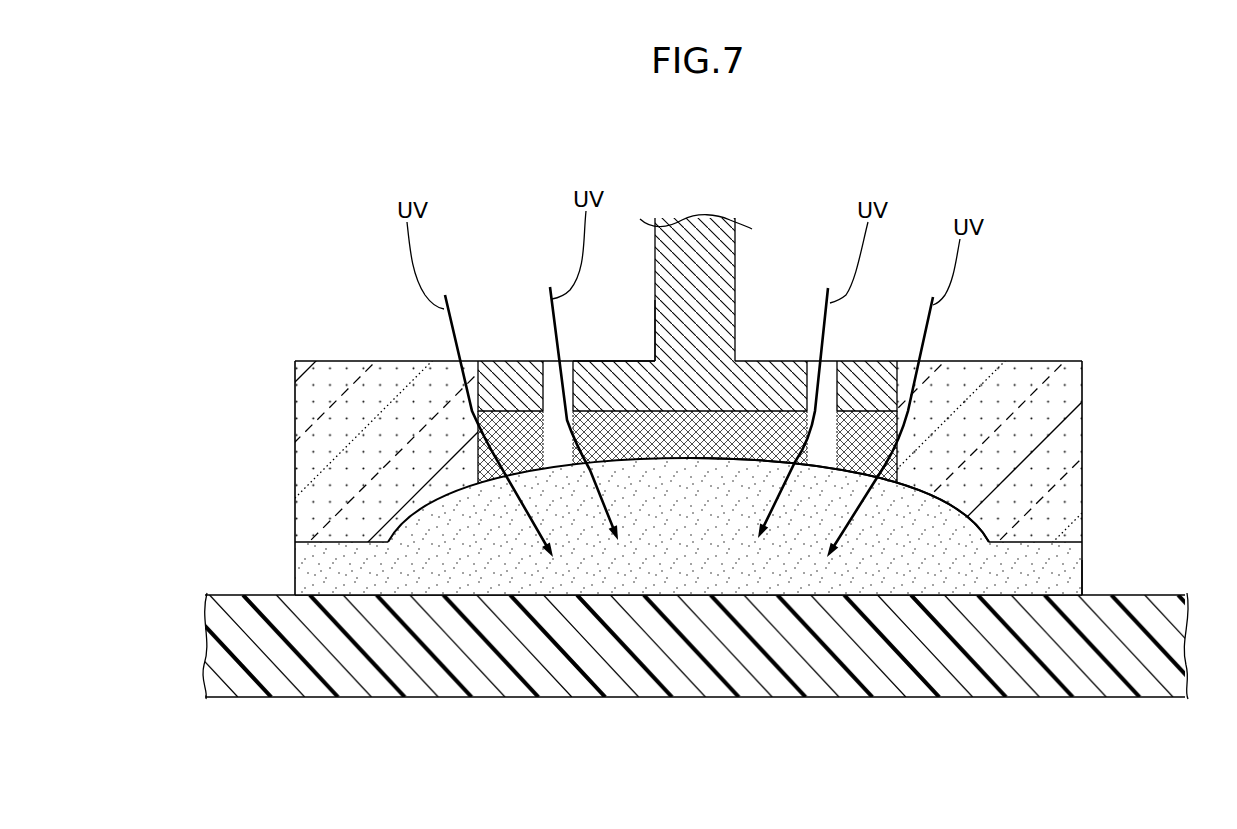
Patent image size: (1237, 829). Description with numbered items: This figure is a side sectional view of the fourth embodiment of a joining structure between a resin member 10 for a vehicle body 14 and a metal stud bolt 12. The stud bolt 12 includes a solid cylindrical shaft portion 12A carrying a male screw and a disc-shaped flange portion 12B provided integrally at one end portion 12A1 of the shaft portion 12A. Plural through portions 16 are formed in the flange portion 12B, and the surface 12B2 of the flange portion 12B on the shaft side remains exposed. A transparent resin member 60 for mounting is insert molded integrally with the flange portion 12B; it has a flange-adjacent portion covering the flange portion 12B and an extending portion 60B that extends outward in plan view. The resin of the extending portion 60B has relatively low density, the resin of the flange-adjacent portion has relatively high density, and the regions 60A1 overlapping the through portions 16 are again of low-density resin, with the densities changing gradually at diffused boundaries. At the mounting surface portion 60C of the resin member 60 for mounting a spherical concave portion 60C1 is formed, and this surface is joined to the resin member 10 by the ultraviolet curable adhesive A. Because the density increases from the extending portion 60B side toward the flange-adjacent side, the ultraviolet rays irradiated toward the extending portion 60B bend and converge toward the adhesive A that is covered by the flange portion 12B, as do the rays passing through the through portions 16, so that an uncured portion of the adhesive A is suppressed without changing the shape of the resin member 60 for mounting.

The resin member for a vehicle body 10 is at (790, 697).
The vehicle body 14 is at (695, 686).
The stud bolt 12 is at (674, 286).
The shaft portion 12A is at (738, 288).
The one end portion 12A1 is at (708, 343).
The flange portion 12B is at (674, 335).
The surface 12B2 is at (617, 361).
The through portions 16 is at (543, 361).
The resin member for mounting 60 is at (657, 429).
The regions 60A1 is at (565, 462).
The extending portion 60B is at (1070, 436).
The mounting surface portion 60C is at (1052, 546).
The spherical concave portion 60C1 is at (942, 510).
The ultraviolet curable adhesive A is at (1075, 582).